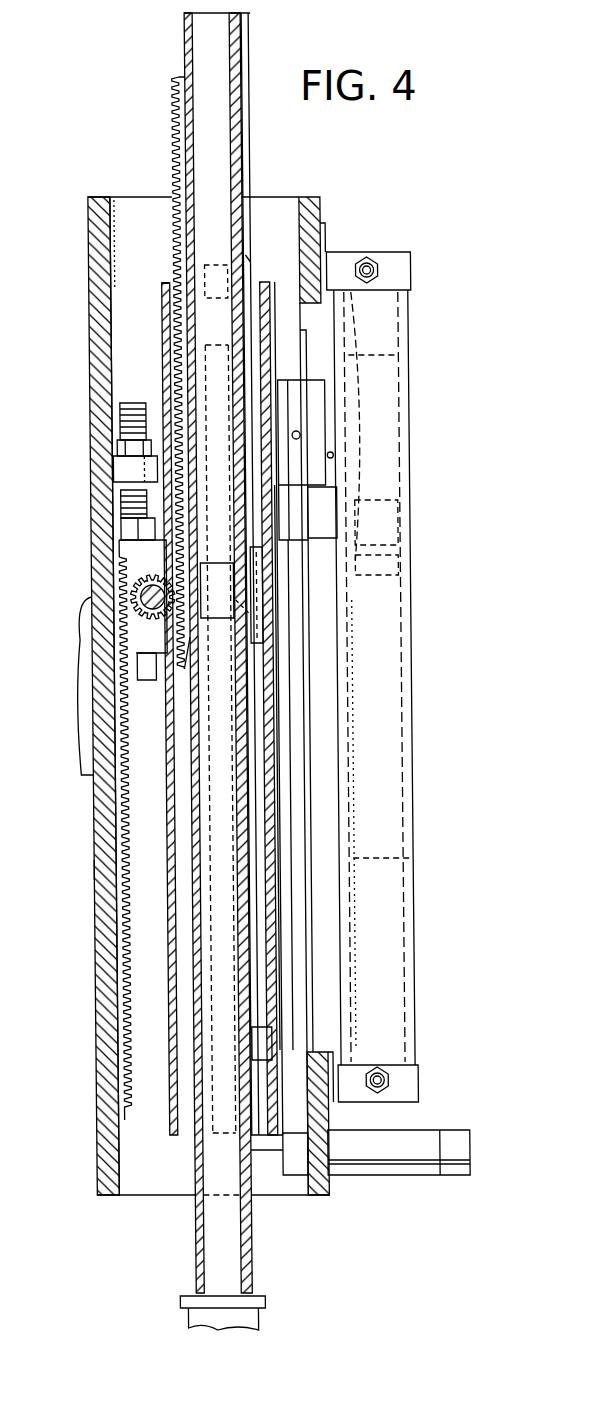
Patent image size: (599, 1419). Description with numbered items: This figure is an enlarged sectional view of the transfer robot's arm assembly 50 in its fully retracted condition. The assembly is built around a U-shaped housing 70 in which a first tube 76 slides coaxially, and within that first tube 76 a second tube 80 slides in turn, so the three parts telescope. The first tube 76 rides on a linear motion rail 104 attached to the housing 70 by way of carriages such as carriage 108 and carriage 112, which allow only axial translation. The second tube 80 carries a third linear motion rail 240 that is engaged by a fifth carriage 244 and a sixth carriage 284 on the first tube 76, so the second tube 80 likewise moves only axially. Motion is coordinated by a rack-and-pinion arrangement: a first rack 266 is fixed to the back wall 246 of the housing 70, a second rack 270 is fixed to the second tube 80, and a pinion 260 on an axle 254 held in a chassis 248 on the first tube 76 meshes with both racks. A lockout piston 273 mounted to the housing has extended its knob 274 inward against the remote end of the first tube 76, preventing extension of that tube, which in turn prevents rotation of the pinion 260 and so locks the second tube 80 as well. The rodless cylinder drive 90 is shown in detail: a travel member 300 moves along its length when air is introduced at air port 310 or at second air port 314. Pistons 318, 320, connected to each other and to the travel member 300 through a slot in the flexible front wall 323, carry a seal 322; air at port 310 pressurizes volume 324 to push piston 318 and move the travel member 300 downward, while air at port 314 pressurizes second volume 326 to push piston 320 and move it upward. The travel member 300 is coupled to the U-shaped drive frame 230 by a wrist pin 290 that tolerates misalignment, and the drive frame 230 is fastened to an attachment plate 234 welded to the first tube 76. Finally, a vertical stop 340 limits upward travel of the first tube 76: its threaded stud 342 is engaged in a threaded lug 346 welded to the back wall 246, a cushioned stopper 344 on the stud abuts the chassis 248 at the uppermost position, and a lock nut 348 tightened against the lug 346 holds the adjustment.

The robot arm assembly 50 is at (92, 868).
The housing 70 is at (92, 207).
The first tube 76 is at (163, 283).
The second tube 80 is at (185, 38).
The rodless cylinder drive 90 is at (410, 368).
The linear motion rail 104 is at (190, 380).
The carriage 108 is at (245, 258).
The carriage 112 is at (292, 612).
The drive frame 230 is at (300, 378).
The attachment plate 234 is at (298, 378).
The third linear motion rail 240 is at (246, 55).
The fifth carriage 244 is at (262, 1035).
The back wall 246 is at (100, 820).
The chassis 248 is at (130, 548).
The axle 254 is at (148, 597).
The pinion 260 is at (148, 612).
The first rack 266 is at (120, 738).
The second rack 270 is at (178, 130).
The lockout piston 273 is at (410, 1178).
The knob 274 is at (265, 1170).
The sixth carriage 284 is at (258, 608).
The wrist pin 290 is at (300, 436).
The travel member 300 is at (345, 420).
The air port 310 is at (372, 262).
The second air port 314 is at (390, 1080).
The piston 318 is at (385, 322).
The piston 320 is at (388, 520).
The seal 322 is at (388, 562).
The flexible front wall 323 is at (355, 862).
The volume 324 is at (388, 290).
The second volume 326 is at (388, 775).
The vertical stop 340 is at (122, 415).
The threaded stud 342 is at (122, 495).
The cushioned stopper 344 is at (128, 520).
The threaded lug 346 is at (130, 470).
The lock nut 348 is at (130, 445).